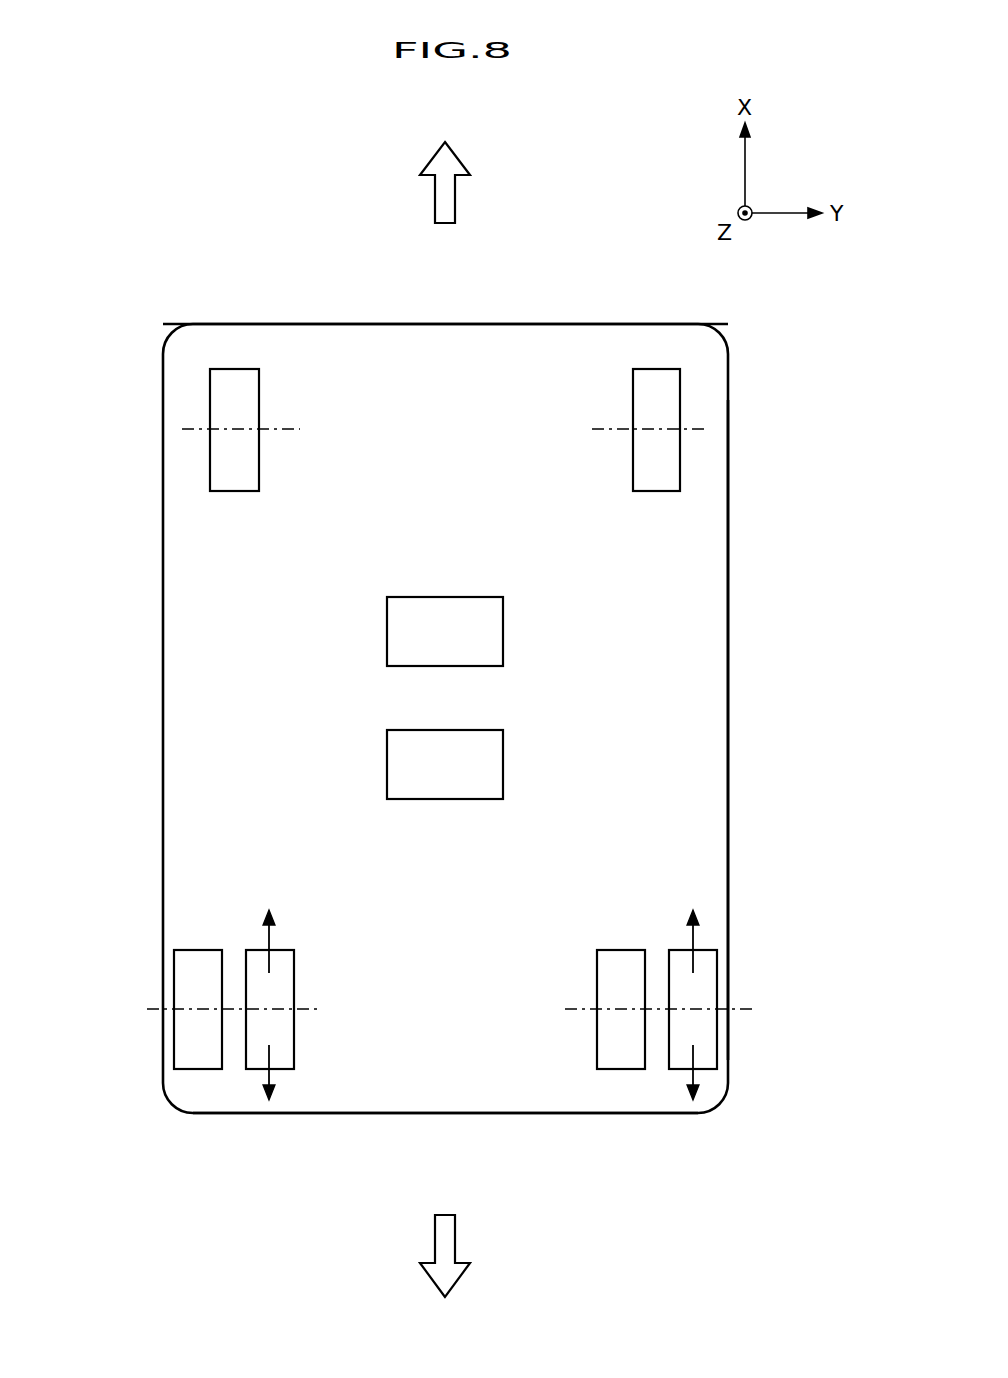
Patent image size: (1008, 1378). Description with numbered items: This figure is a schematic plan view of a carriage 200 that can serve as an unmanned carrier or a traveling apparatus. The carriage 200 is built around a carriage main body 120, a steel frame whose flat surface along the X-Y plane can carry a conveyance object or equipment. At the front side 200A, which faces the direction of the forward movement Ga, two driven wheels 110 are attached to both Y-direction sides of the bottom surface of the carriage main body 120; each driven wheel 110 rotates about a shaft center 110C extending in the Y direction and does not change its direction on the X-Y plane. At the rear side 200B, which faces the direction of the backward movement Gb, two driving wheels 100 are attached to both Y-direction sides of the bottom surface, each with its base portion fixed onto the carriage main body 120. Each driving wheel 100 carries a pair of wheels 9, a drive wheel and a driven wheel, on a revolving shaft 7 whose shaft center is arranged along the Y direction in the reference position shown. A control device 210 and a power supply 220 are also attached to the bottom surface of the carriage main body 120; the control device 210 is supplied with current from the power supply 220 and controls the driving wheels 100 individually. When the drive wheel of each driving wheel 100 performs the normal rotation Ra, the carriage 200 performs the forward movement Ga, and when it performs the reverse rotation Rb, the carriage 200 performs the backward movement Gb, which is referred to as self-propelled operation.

The carriage 200 is at (728, 546).
The front side 200A is at (332, 324).
The rear side 200B is at (486, 1113).
The carriage main body 120 is at (700, 720).
The driven wheel 110 is at (210, 470).
The shaft center 110C is at (185, 429).
The control device 210 is at (387, 634).
The power supply 220 is at (387, 768).
The wheel 9 is at (203, 1069).
The revolving shaft 7 is at (152, 1009).
The normal rotation Ra is at (272, 932).
The reverse rotation Rb is at (272, 1078).
The driving wheel 100 is at (167, 1073).
The forward movement Ga is at (455, 205).
The backward movement Gb is at (455, 1238).